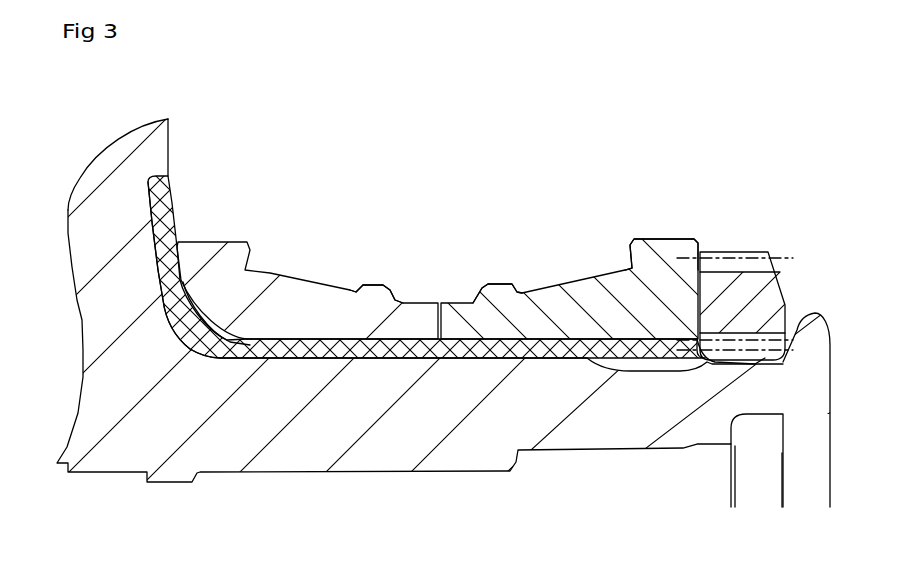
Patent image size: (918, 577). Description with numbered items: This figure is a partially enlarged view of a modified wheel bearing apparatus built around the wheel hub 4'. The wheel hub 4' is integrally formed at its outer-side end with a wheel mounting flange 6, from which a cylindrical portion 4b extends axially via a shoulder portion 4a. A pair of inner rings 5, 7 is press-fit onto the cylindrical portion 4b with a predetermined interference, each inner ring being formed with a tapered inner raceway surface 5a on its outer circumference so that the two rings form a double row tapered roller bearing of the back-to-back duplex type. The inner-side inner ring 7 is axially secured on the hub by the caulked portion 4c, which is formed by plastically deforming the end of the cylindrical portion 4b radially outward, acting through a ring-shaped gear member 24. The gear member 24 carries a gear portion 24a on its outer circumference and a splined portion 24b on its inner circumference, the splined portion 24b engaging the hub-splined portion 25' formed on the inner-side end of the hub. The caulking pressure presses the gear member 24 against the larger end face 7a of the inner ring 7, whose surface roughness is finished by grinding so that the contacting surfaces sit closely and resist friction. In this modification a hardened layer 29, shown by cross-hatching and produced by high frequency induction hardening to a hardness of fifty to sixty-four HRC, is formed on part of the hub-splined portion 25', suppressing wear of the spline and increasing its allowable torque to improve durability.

The wheel mounting flange 6 is at (113, 157).
The wheel hub 4' is at (459, 288).
The shoulder portion 4a is at (178, 274).
The cylindrical portion 4b is at (350, 322).
The caulked portion 4c is at (803, 326).
The outer-side inner ring 5 is at (286, 296).
The inner raceway surface 5a is at (333, 283).
The inner-side inner ring 7 is at (550, 303).
The larger end face 7a is at (677, 240).
The gear member 24 is at (753, 283).
The gear portion 24a is at (721, 258).
The splined portion 24b is at (777, 367).
The hub-splined portion 25' is at (770, 420).
The hardened layer 29 is at (458, 352).